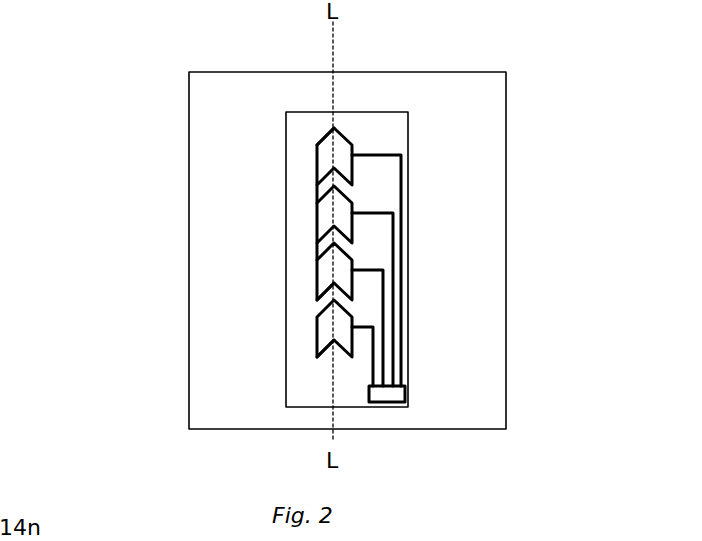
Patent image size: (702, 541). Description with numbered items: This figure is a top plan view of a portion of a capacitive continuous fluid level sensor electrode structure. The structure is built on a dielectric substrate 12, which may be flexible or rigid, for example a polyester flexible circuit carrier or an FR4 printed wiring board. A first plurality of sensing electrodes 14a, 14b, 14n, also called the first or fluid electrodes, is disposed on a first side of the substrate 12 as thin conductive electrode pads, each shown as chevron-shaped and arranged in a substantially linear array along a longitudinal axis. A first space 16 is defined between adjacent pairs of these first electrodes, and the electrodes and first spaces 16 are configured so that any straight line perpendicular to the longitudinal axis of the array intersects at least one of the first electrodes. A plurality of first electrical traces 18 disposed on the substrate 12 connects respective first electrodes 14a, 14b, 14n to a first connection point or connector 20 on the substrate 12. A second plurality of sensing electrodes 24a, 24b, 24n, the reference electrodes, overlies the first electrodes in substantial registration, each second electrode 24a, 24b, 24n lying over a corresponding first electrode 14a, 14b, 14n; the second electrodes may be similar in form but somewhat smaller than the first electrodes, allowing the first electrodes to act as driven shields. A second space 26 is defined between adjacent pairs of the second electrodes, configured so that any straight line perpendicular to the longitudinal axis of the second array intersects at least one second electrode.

The dielectric substrate 12 is at (393, 123).
The first sensing electrode 14n is at (305, 157).
The first sensing electrode 14b is at (303, 278).
The first sensing electrode 14a is at (303, 336).
The first space 16 is at (304, 238).
The first electrical traces 18 is at (374, 200).
The first connection point or connector 20 is at (397, 393).
The second sensing electrode 24n is at (315, 120).
The second sensing electrode 24b is at (303, 296).
The second sensing electrode 24a is at (303, 358).
The second space 26 is at (303, 184).